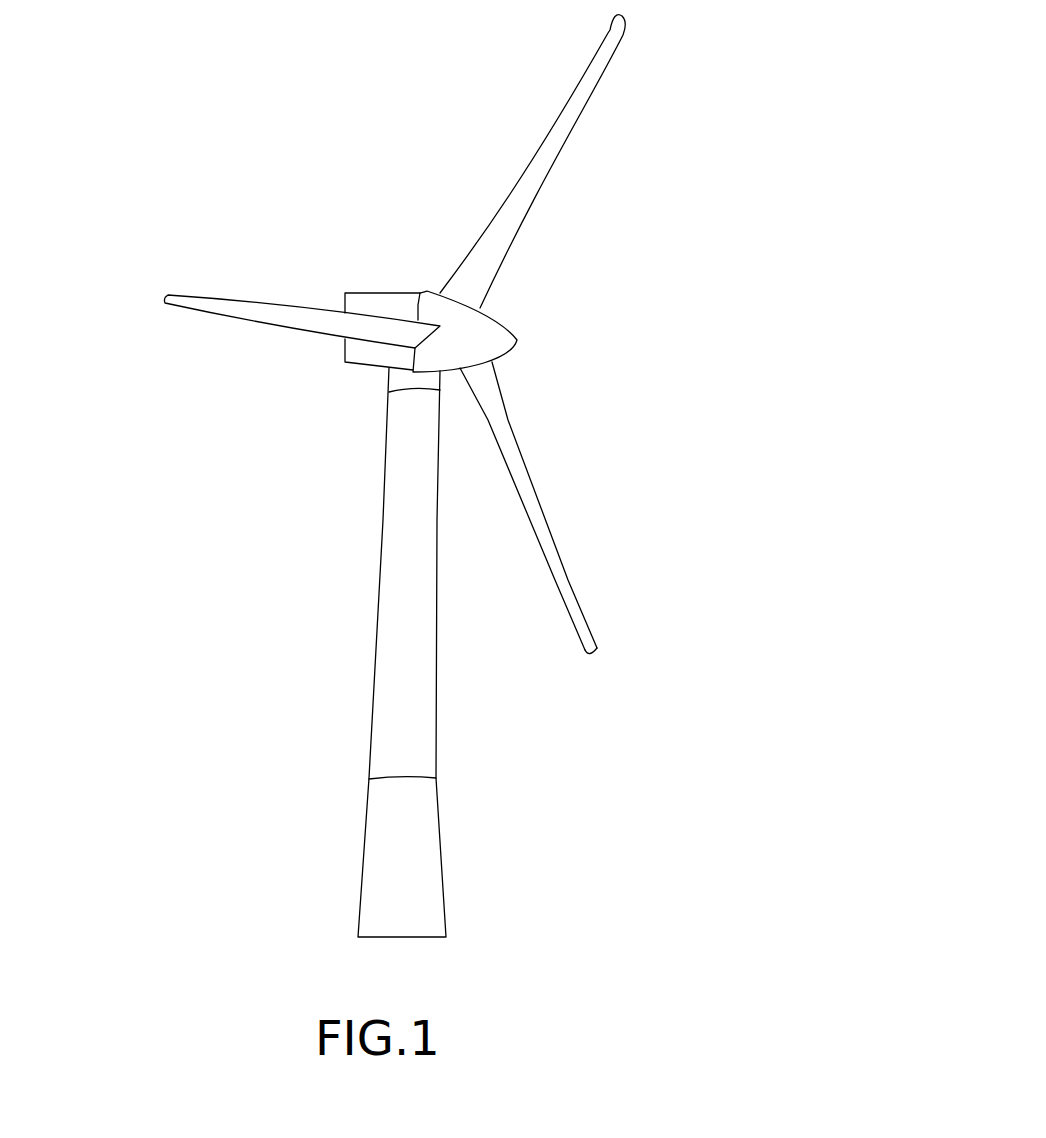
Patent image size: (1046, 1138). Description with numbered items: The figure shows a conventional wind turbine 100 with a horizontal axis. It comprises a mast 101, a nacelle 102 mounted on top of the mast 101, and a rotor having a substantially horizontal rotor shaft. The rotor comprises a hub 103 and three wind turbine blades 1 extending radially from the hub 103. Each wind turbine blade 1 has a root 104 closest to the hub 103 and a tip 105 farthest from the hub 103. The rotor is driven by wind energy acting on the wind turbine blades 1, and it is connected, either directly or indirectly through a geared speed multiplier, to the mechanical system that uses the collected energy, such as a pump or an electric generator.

The wind turbine 100 is at (177, 138).
The wind turbine blade 1 is at (604, 54).
The mast 101 is at (386, 600).
The nacelle 102 is at (363, 303).
The hub 103 is at (492, 328).
The root 104 is at (497, 370).
The tip 105 is at (597, 647).